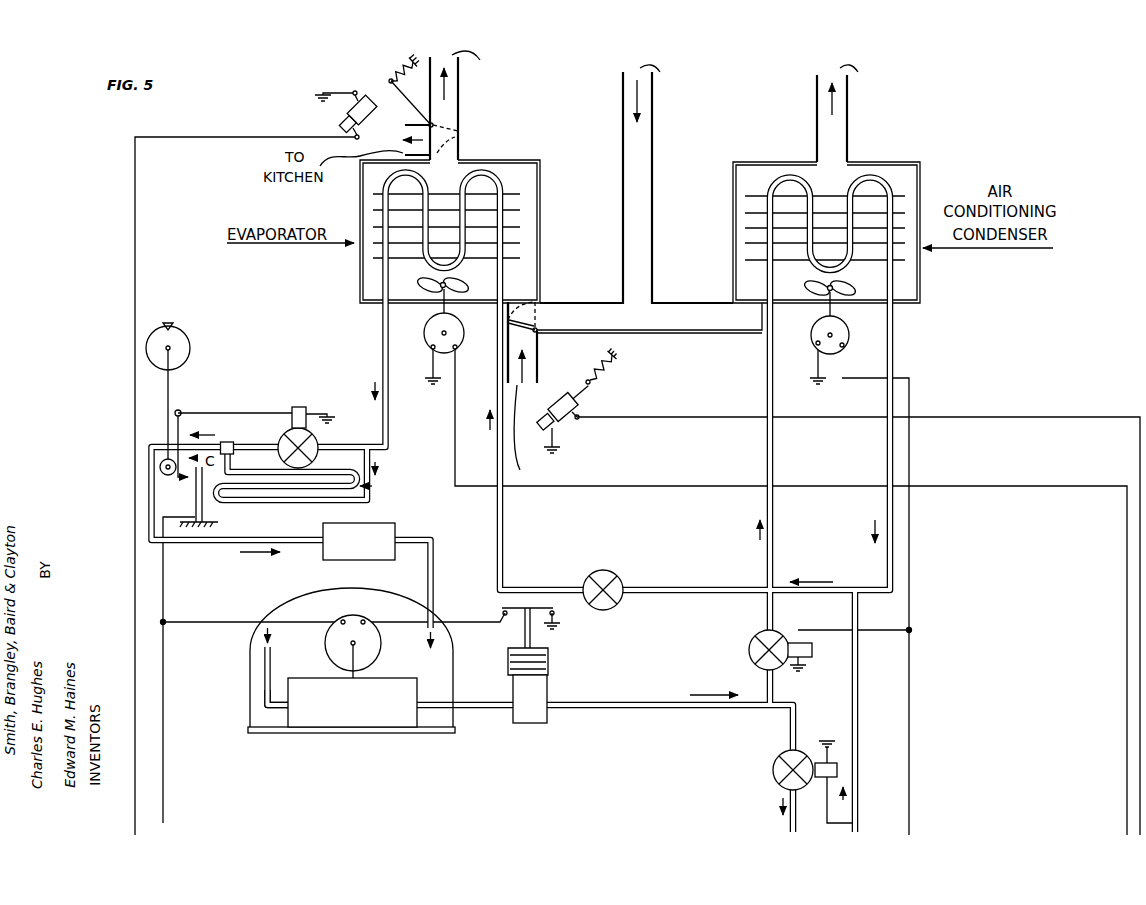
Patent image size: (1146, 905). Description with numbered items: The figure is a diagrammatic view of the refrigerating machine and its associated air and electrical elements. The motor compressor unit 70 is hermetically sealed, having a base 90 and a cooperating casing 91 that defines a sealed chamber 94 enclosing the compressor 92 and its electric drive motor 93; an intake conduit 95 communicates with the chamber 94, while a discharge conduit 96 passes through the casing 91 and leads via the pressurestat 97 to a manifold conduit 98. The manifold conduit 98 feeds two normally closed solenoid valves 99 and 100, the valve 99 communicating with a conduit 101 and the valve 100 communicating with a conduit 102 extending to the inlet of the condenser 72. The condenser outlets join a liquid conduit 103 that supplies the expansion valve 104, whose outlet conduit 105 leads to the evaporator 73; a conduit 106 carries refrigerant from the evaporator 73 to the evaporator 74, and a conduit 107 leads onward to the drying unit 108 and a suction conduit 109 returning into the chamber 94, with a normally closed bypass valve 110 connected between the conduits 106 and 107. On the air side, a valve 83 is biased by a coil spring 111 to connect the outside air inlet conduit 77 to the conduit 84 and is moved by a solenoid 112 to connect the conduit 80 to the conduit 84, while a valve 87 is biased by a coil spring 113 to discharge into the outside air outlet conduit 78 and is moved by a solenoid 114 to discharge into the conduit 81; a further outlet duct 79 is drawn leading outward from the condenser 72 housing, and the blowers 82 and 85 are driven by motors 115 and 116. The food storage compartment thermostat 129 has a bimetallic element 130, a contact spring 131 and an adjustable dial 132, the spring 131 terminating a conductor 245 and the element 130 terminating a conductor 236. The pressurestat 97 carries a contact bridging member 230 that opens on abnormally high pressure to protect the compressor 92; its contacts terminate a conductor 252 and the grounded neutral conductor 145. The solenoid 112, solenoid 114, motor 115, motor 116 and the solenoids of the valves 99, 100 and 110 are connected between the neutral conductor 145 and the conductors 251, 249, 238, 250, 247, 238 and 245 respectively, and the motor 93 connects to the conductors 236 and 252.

The motor compressor unit 70 is at (288, 597).
The condenser 72 is at (811, 188).
The evaporator 73 is at (427, 186).
The evaporator 74 is at (243, 504).
The outside air inlet conduit 77 is at (653, 120).
The outside air outlet conduit 78 is at (460, 96).
The condenser to outside duct 79 is at (848, 120).
The conduit 80 is at (538, 368).
The conduit 81 is at (418, 124).
The blower 82 is at (815, 288).
The valve 83 is at (525, 323).
The conduit 84 is at (510, 317).
The blower 85 is at (458, 284).
The valve 87 is at (453, 137).
The base 90 is at (344, 734).
The casing 91 is at (250, 673).
The compressor 92 is at (392, 678).
The electric drive motor 93 is at (370, 647).
The hermetically sealed chamber 94 is at (311, 650).
The intake conduit 95 is at (273, 673).
The discharge conduit 96 is at (469, 710).
The pressurestat 97 is at (533, 724).
The manifold conduit 98 is at (655, 710).
The valve 99 is at (774, 772).
The valve 100 is at (750, 652).
The conduit 101 is at (788, 820).
The conduit 102 is at (768, 612).
The liquid conduit 103 is at (892, 340).
The expansion valve 104 is at (597, 580).
The conduit 105 is at (503, 583).
The conduit 106 is at (384, 362).
The conduit 107 is at (236, 444).
The drying unit 108 is at (359, 541).
The suction conduit 109 is at (434, 572).
The bypass valve 110 is at (316, 436).
The coil spring 111 is at (605, 371).
The solenoid 112 is at (573, 403).
The coil spring 113 is at (394, 70).
The solenoid 114 is at (343, 119).
The electric drive motor 115 is at (847, 337).
The electric drive motor 116 is at (457, 347).
The food storage compartment thermostat 129 is at (180, 487).
The bimetallic element 130 is at (195, 505).
The contact spring 131 is at (178, 410).
The manually adjustable dial 132 is at (189, 350).
The grounded neutral conductor 145 is at (835, 745).
The contact bridging member 230 is at (507, 615).
The conductor 236 is at (163, 770).
The conductor 238 is at (909, 740).
The conductor 245 is at (220, 413).
The conductor 247 is at (830, 823).
The conductor 249 is at (136, 808).
The conductor 250 is at (1126, 745).
The conductor 251 is at (1140, 762).
The conductor 252 is at (500, 622).